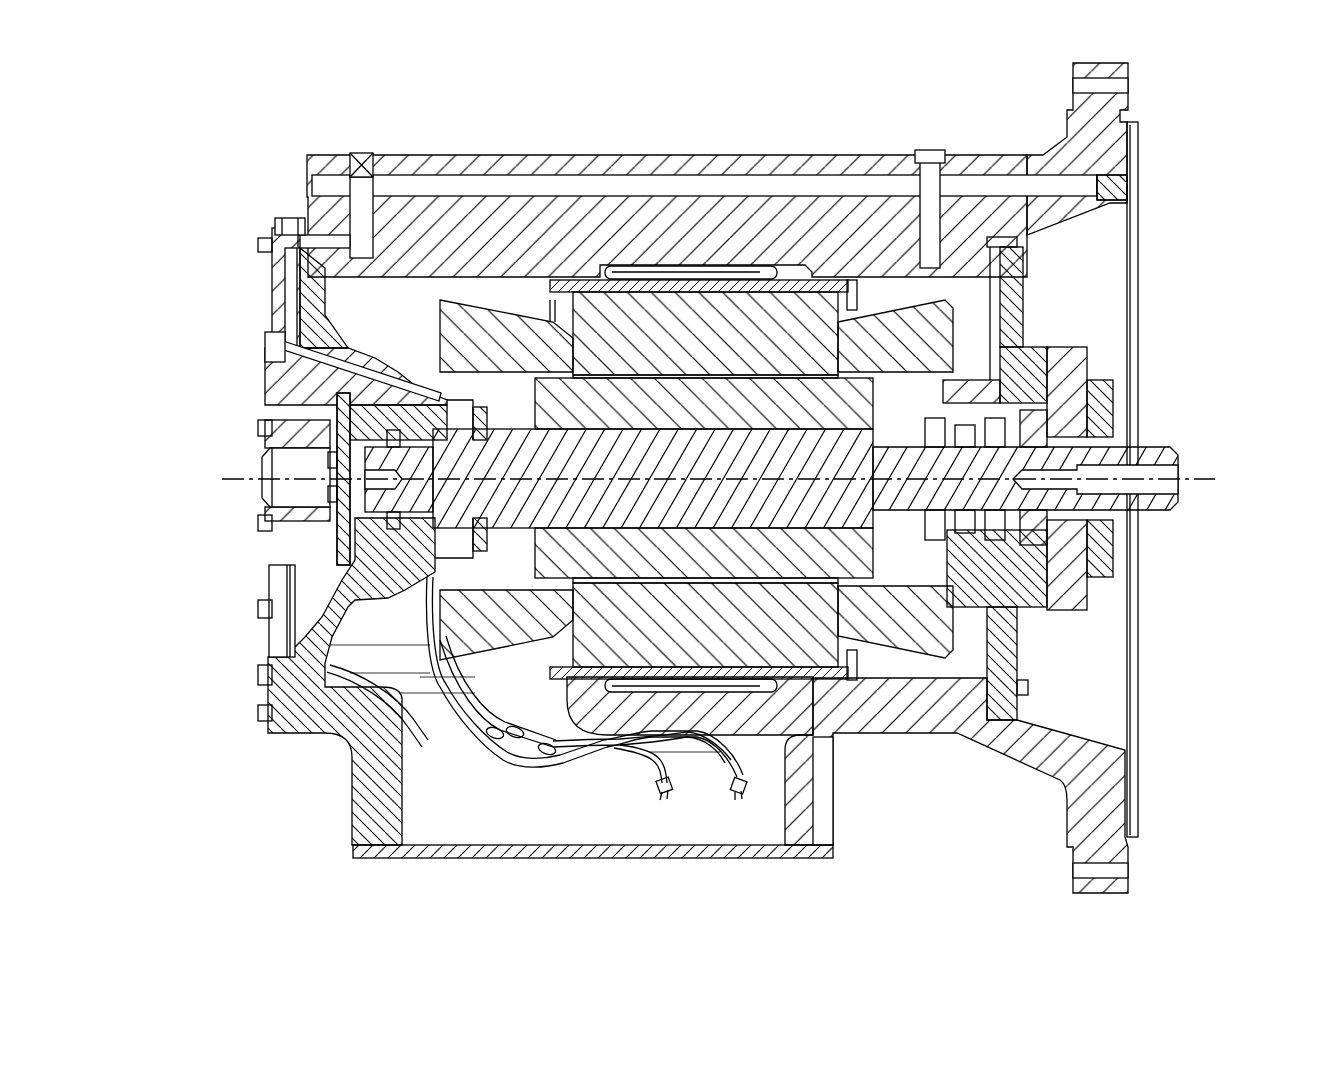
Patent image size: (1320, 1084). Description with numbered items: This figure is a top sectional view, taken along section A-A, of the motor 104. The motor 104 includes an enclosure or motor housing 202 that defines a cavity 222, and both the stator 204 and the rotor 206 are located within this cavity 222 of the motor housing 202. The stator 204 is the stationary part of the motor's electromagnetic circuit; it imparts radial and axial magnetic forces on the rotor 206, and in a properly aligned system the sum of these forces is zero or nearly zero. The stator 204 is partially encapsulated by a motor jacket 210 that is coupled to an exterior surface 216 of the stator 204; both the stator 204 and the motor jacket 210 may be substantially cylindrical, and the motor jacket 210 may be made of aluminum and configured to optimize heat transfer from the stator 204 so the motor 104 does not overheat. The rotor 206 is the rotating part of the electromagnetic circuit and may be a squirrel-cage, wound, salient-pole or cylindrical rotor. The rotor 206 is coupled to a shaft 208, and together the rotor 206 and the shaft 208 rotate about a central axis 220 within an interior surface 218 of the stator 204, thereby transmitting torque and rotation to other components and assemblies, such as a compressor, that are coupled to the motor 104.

The motor 104 is at (136, 155).
The motor housing 202 is at (563, 222).
The stator 204 is at (806, 320).
The rotor 206 is at (673, 403).
The shaft 208 is at (548, 512).
The motor jacket 210 is at (598, 675).
The exterior surface 216 is at (718, 372).
The interior surface 218 is at (808, 365).
The central axis 220 is at (222, 479).
The cavity 222 is at (393, 300).